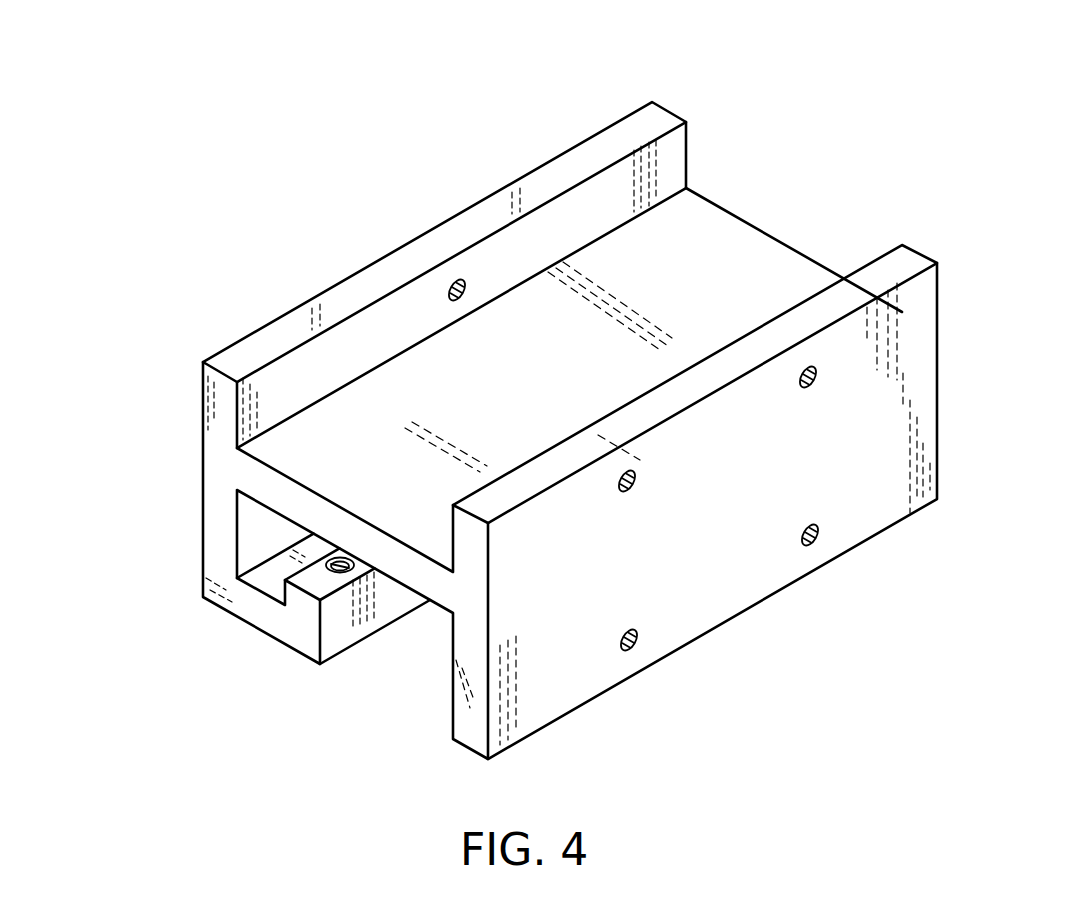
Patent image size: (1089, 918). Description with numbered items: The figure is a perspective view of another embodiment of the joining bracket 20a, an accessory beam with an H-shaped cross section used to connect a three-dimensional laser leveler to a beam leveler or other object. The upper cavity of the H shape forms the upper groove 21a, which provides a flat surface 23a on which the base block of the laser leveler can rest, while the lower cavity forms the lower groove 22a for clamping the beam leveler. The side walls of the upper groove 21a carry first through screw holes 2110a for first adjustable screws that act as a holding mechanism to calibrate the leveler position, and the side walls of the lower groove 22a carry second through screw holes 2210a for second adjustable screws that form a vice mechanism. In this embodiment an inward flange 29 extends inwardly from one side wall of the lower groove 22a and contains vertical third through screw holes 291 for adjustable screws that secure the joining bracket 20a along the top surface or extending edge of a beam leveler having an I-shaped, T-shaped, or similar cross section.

The joining bracket 20a is at (600, 425).
The upper groove 21a is at (702, 218).
The lower groove 22a is at (387, 642).
The flat surface 23a is at (555, 373).
The inward flange 29 is at (265, 613).
The vertical third through screw hole 291 is at (333, 573).
The first through screw hole 2110a is at (447, 283).
The second through screw hole 2210a is at (817, 542).